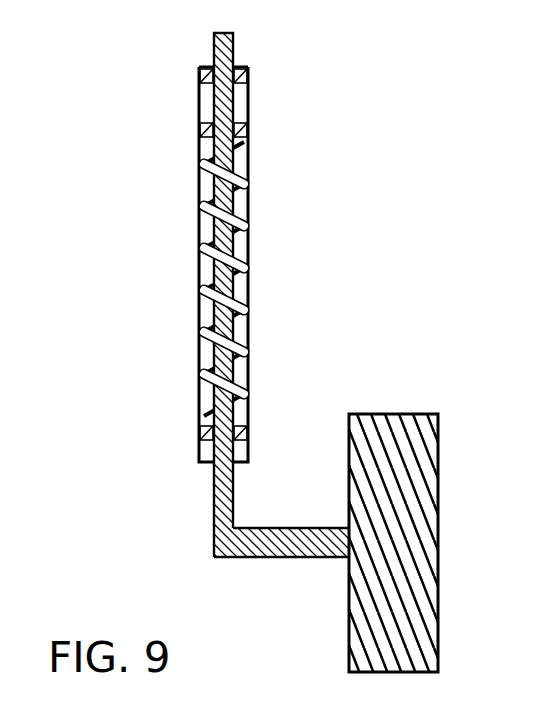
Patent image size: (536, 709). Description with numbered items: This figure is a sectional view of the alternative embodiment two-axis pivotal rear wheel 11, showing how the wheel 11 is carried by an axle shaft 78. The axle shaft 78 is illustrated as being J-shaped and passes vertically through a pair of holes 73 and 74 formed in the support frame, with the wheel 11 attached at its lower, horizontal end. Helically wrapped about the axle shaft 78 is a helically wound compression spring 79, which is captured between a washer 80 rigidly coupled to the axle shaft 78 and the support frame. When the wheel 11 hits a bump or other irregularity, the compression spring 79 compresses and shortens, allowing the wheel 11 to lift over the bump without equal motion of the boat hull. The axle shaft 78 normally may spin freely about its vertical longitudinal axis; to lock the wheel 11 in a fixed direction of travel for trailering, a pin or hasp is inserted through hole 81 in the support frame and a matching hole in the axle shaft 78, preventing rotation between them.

The two-axis pivotal rear wheel 11 is at (430, 590).
The hole 73 is at (213, 468).
The hole 74 is at (235, 58).
The axle shaft 78 is at (275, 553).
The helically wound compression spring 79 is at (243, 270).
The washer 80 is at (248, 433).
The hole 81 is at (243, 113).